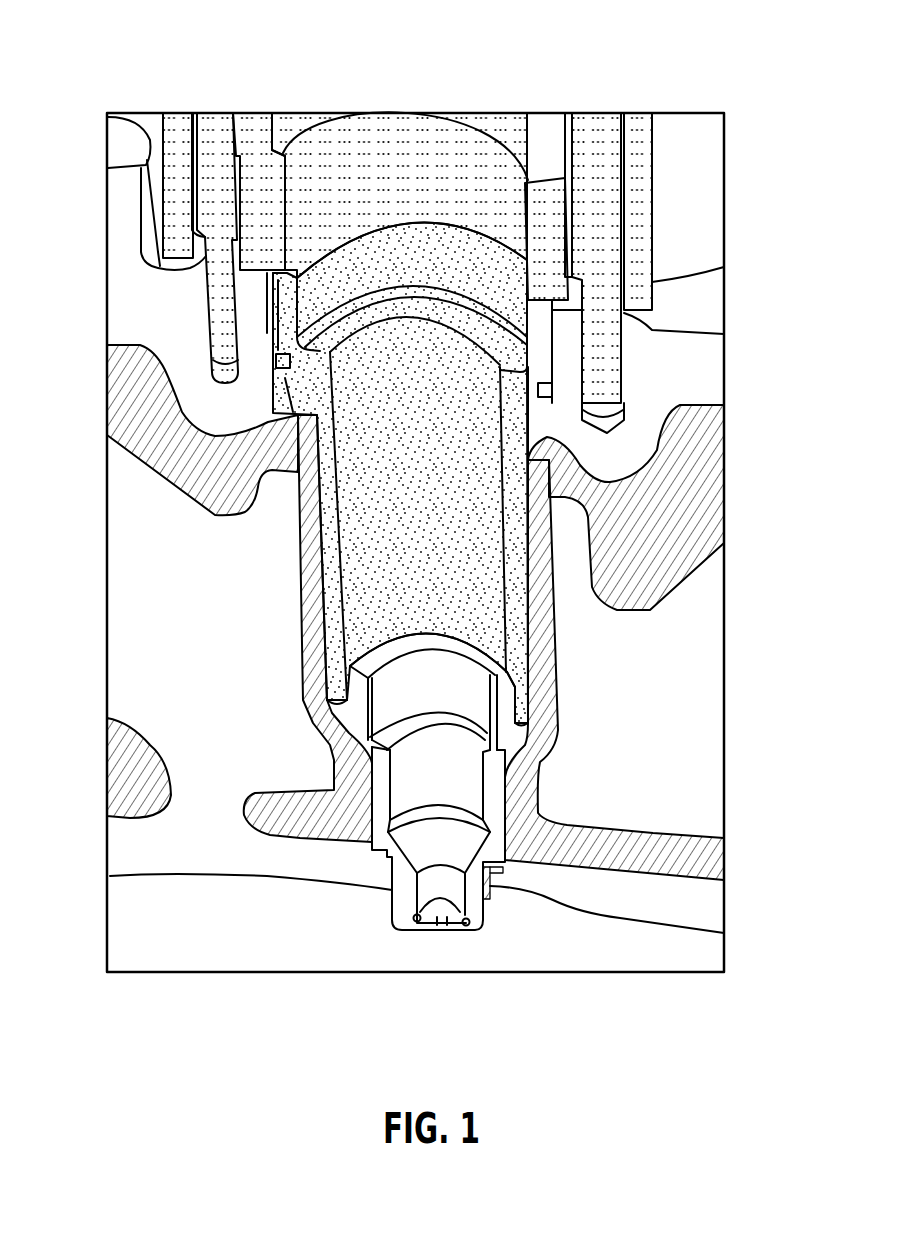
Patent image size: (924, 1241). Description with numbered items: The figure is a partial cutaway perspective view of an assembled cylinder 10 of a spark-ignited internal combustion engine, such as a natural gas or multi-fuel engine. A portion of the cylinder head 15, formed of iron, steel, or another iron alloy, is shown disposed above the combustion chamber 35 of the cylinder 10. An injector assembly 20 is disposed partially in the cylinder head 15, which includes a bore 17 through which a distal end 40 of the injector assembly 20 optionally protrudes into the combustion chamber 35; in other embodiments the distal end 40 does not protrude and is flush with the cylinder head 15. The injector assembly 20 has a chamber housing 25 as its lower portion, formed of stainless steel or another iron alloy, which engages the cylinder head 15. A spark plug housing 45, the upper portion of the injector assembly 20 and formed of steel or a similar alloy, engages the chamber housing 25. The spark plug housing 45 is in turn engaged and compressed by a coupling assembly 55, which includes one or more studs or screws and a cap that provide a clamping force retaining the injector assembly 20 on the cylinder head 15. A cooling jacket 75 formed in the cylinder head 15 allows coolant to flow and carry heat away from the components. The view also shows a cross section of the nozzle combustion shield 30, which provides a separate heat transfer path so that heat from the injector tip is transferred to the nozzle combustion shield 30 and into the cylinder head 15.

The cylinder 10 is at (77, 59).
The coupling assembly 55 is at (650, 196).
The cylinder head 15 is at (167, 638).
The injector assembly 20 is at (316, 512).
The chamber housing 25 is at (111, 749).
The nozzle combustion shield 30 is at (390, 876).
The bore 17 is at (545, 887).
The distal end 40 is at (465, 935).
The spark plug housing 45 is at (527, 493).
The cooling jacket 75 is at (590, 837).
The combustion chamber 35 is at (163, 928).